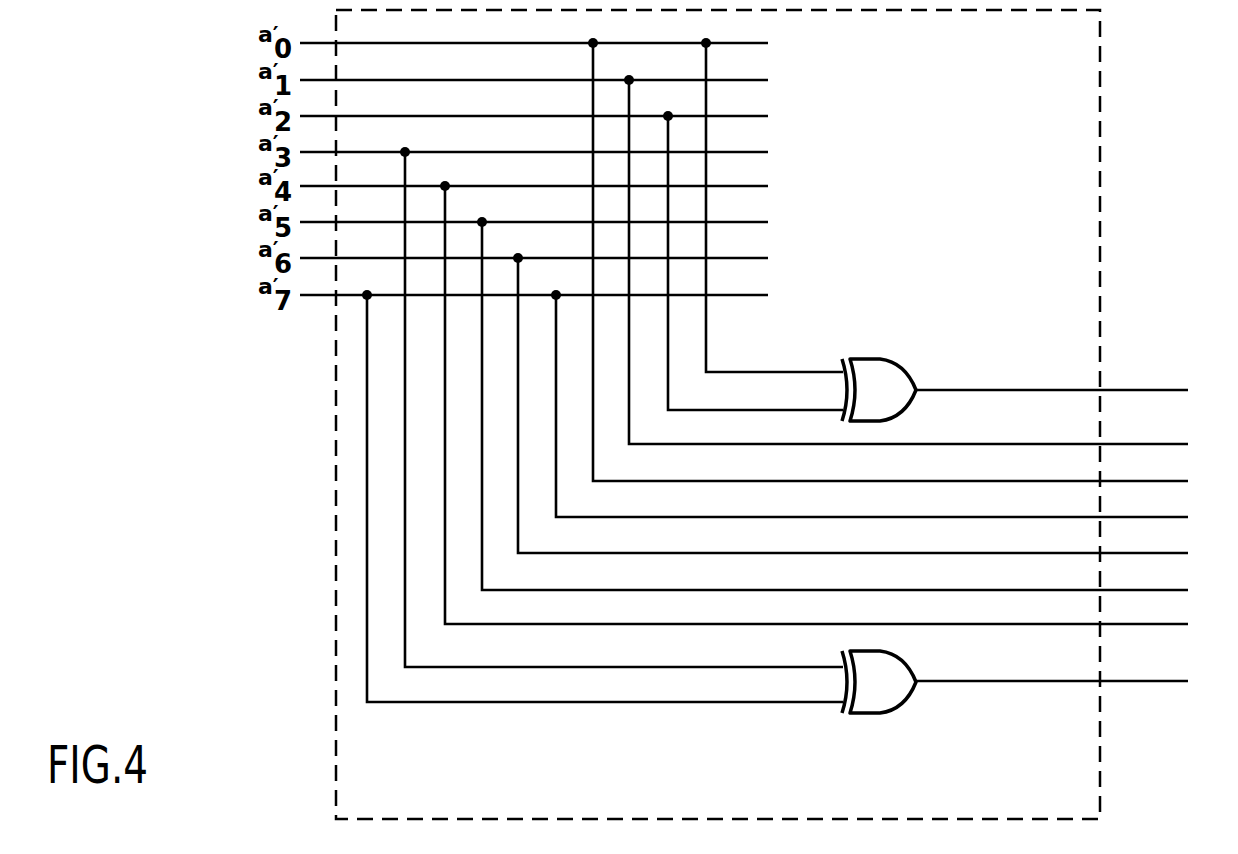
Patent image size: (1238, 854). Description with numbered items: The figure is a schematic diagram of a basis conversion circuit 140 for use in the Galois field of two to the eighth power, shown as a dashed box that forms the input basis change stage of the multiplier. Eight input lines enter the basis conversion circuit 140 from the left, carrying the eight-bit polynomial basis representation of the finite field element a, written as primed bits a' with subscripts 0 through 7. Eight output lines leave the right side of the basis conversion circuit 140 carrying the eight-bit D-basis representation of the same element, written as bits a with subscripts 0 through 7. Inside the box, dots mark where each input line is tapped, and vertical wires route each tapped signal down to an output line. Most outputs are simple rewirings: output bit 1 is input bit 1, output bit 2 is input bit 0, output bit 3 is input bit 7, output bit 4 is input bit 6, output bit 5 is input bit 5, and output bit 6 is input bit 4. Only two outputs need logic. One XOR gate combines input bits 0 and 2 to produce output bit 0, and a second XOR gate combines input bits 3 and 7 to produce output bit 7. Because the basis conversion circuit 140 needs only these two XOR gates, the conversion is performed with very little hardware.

The basis conversion circuit 140 is at (1100, 773).
The output signal a0 0 is at (1072, 394).
The output signal a1 1 is at (929, 273).
The output signal a2 2 is at (911, 272).
The output signal a3 3 is at (892, 417).
The output signal a4 4 is at (873, 416).
The output signal a5 5 is at (855, 416).
The output signal a6 6 is at (837, 416).
The output signal a7 7 is at (1072, 685).